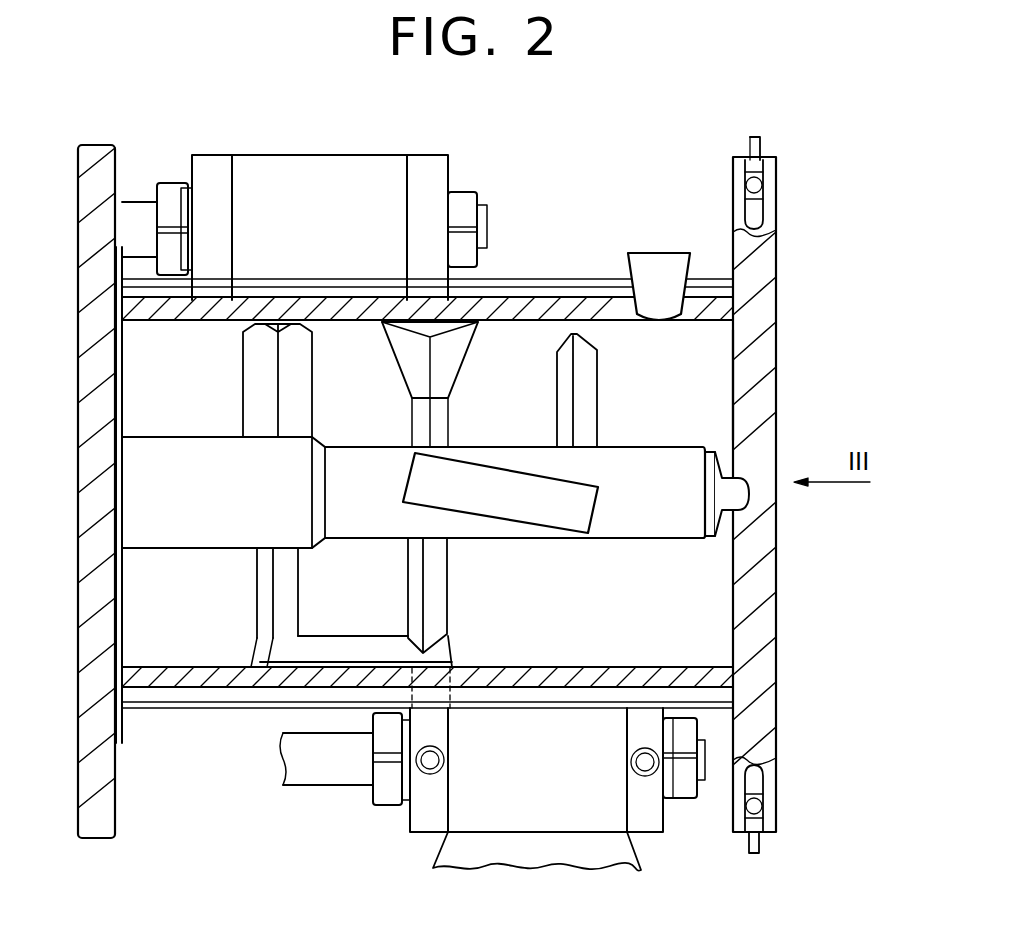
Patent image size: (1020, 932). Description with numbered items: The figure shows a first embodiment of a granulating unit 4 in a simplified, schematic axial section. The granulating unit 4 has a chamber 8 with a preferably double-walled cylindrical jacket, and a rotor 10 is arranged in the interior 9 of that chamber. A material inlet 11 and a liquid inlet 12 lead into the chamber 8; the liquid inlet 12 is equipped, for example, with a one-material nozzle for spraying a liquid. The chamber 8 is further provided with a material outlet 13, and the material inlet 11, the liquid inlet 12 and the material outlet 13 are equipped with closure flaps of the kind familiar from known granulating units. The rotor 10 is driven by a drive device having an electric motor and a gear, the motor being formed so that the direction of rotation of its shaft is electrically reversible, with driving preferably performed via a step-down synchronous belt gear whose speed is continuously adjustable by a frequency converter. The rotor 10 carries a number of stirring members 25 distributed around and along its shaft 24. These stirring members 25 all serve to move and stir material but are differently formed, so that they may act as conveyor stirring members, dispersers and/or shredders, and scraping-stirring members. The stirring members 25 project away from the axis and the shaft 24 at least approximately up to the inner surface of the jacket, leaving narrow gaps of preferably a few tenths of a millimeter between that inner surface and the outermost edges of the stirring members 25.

The granulating unit 4 is at (783, 697).
The chamber 8 is at (690, 660).
The interior 9 is at (710, 408).
The rotor 10 is at (470, 438).
The material inlet 11 is at (432, 154).
The liquid inlet 12 is at (642, 252).
The material outlet 13 is at (647, 833).
The shaft 24 is at (478, 545).
The stirring members 25 is at (597, 508).